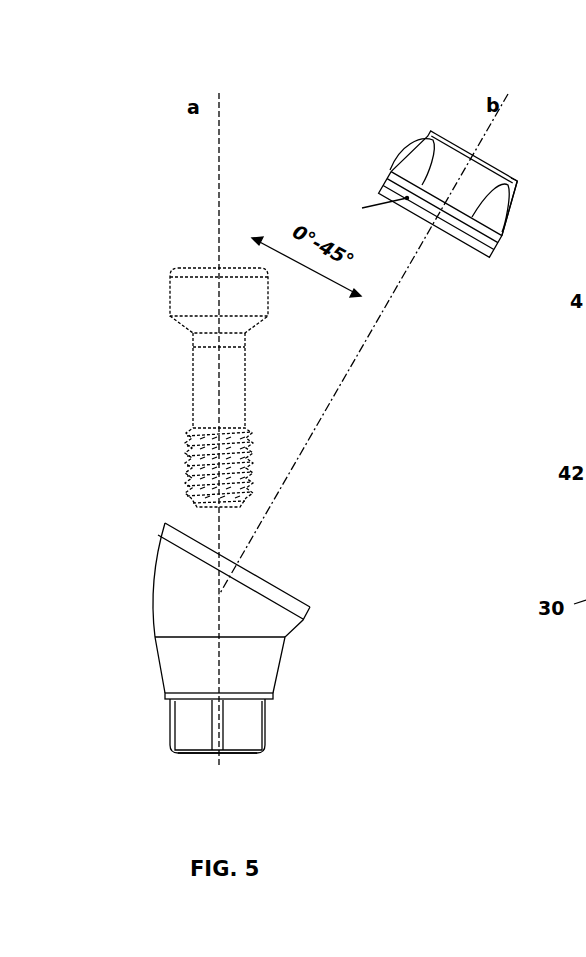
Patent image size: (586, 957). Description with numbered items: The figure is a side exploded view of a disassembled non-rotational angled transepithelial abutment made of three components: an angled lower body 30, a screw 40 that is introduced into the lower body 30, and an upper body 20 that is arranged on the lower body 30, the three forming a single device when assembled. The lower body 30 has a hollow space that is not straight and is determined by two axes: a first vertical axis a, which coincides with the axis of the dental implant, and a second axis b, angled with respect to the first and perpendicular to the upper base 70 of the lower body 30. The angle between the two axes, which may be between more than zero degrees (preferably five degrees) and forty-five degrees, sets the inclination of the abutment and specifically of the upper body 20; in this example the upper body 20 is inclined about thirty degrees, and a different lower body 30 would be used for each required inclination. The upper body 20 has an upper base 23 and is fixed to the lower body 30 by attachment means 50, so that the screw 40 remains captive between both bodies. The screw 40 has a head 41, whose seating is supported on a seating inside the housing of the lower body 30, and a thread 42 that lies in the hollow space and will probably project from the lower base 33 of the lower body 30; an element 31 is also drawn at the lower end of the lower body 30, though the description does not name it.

The upper body 20 is at (471, 190).
The upper base 23 is at (497, 165).
The attachment means 50 is at (487, 235).
The screw 40 is at (174, 373).
The head 41 is at (188, 294).
The thread 42 is at (195, 477).
The upper base 70 is at (288, 602).
The lower body 30 is at (229, 663).
The stub 31 is at (255, 728).
The lower base 33 is at (243, 754).